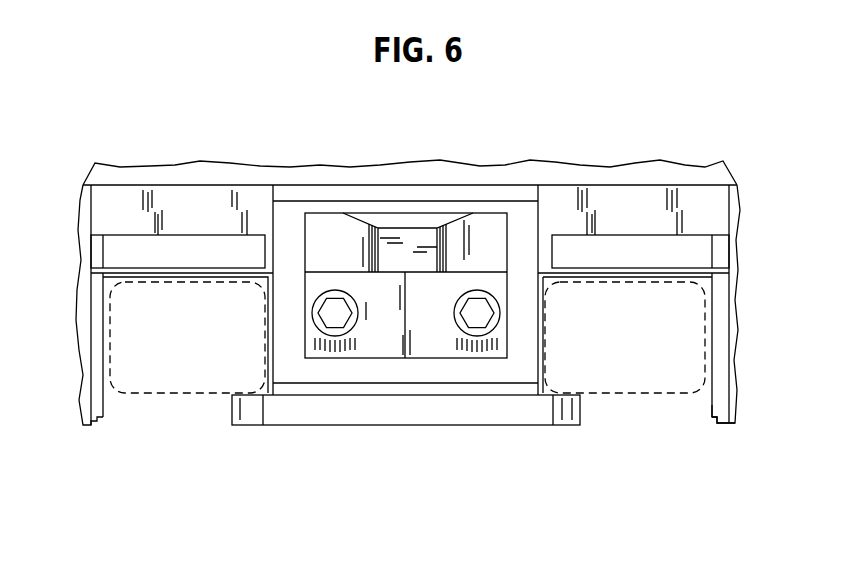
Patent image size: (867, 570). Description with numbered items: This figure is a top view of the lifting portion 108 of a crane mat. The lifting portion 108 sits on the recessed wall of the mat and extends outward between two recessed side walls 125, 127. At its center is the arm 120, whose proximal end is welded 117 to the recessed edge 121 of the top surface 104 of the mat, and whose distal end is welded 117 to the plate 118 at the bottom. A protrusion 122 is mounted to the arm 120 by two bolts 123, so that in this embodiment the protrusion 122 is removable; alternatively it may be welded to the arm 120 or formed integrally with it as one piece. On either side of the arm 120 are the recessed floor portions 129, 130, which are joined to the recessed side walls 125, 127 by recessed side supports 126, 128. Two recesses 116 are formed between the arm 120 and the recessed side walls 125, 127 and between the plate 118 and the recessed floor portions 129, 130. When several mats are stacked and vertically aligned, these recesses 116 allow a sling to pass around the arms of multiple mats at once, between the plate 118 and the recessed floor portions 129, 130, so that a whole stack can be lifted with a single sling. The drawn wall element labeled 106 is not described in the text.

The top surface 104 is at (697, 172).
The housing wall 106 is at (720, 415).
The lifting portion 108 is at (302, 457).
The recesses 116 is at (187, 395).
The weld 117 is at (440, 190).
The plate 118 is at (498, 413).
The arm 120 is at (522, 250).
The recessed edge 121 is at (183, 183).
The protrusion 122 is at (488, 238).
The bolts 123 is at (335, 308).
The recessed side wall 125 is at (83, 322).
The recessed side support 126 is at (132, 253).
The recessed side wall 127 is at (730, 357).
The recessed side support 128 is at (620, 252).
The recessed floor portion 129 is at (207, 207).
The recessed floor portion 130 is at (700, 207).